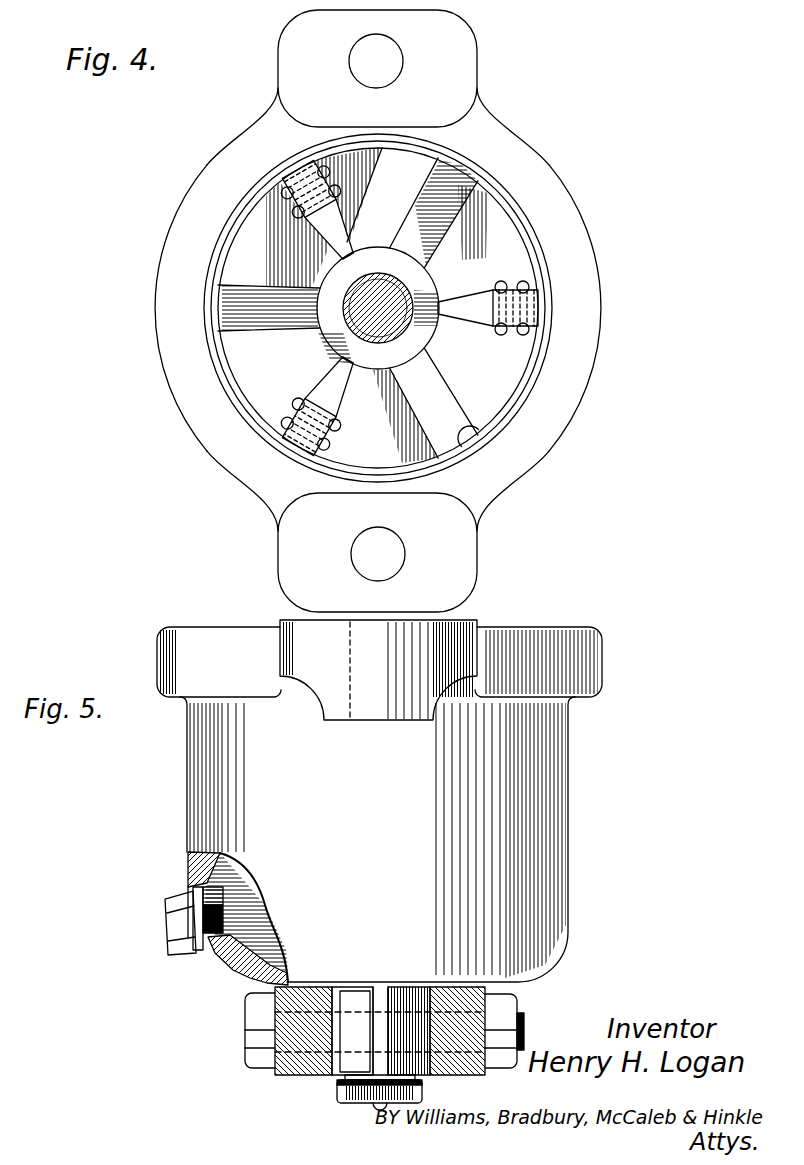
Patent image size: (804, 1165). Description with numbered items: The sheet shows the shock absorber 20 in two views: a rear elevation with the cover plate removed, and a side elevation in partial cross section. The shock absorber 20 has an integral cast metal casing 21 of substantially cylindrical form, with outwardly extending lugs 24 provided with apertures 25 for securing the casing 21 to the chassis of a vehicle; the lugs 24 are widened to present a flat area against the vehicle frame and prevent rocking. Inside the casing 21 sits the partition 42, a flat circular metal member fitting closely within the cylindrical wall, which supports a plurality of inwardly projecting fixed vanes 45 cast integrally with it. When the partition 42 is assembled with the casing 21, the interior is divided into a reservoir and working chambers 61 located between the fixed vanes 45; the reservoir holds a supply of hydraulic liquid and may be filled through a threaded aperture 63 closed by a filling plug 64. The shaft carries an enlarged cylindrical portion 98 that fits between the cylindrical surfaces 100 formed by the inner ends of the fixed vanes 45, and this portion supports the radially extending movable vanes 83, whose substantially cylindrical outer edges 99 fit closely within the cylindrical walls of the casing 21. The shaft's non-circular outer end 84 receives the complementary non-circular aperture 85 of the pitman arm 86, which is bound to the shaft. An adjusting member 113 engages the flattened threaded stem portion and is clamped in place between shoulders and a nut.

In FIG. 4, the shock absorber 20 is at (185, 435).
In FIG. 5, the casing 21 is at (548, 893).
In FIG. 4, the lugs 24 is at (291, 60).
In FIG. 5, the lugs 24 is at (327, 707).
In FIG. 4, the apertures 25 is at (355, 69).
In FIG. 5, the apertures 25 is at (364, 712).
In FIG. 4, the partition 42 is at (403, 173).
In FIG. 4, the fixed vanes 45 is at (331, 219).
In FIG. 4, the working chambers 61 is at (507, 250).
In FIG. 5, the threaded aperture 63 is at (187, 880).
In FIG. 5, the filling plug 64 is at (183, 927).
In FIG. 4, the movable vanes 83 is at (457, 208).
In FIG. 5, the non-circular outer end 84 is at (357, 1003).
In FIG. 5, the non-circular aperture 85 is at (247, 1047).
In FIG. 5, the pitman arm 86 is at (307, 1075).
In FIG. 4, the enlarged cylindrical portion 98 is at (433, 281).
In FIG. 4, the cylindrical outer edges 99 is at (478, 428).
In FIG. 4, the cylindrical surfaces 100 is at (348, 246).
In FIG. 5, the adjusting member 113 is at (420, 1093).